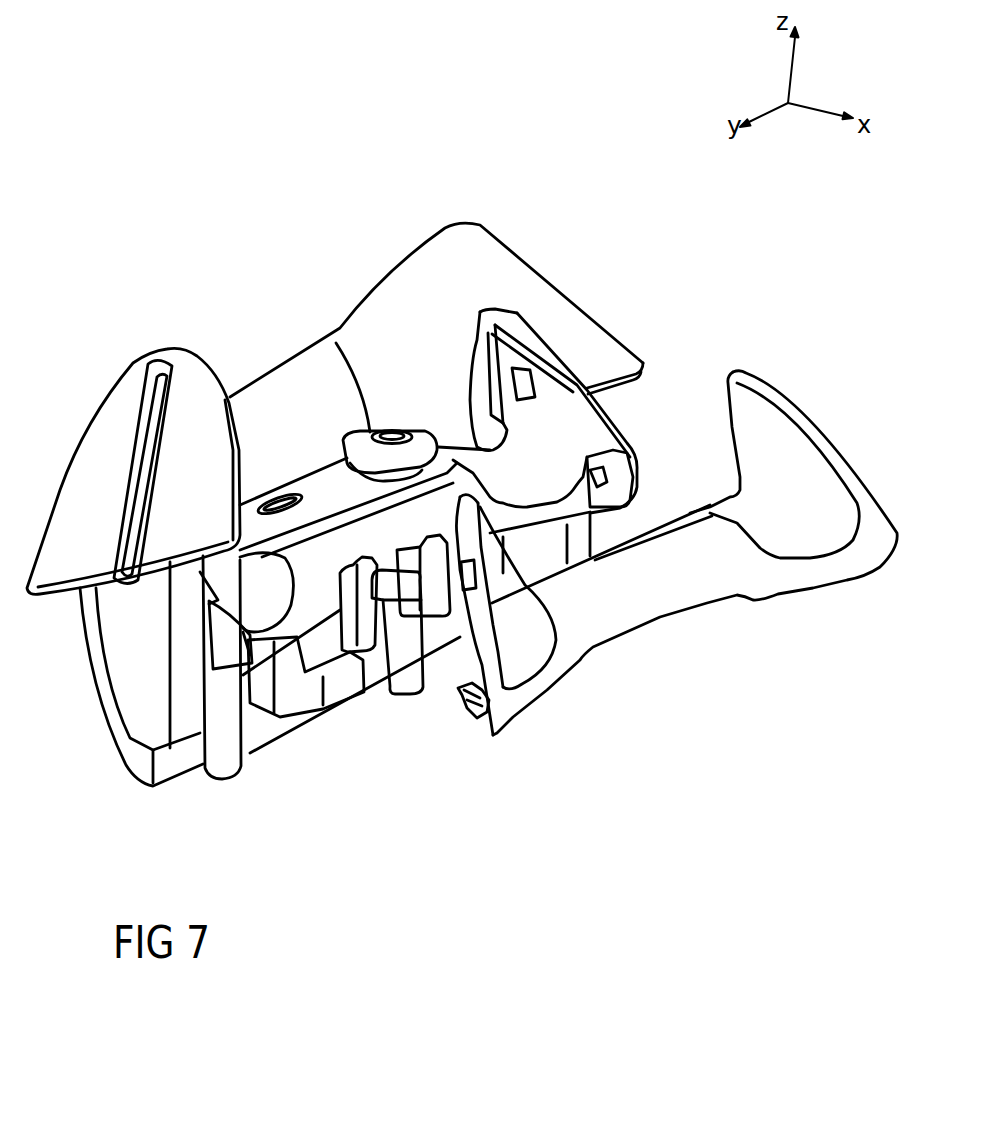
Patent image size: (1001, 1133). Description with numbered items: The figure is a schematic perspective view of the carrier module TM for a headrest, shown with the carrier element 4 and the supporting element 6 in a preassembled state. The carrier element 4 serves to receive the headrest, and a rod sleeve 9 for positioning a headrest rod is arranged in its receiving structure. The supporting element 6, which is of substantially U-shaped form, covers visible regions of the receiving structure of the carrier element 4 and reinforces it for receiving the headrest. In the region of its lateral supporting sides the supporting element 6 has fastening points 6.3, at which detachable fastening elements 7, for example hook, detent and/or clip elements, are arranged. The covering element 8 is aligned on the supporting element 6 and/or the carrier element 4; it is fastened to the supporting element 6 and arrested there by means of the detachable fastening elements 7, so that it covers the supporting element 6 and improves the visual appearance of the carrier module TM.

The carrier module TM is at (230, 281).
The carrier element 4 is at (539, 254).
The supporting element 6 is at (619, 414).
The fastening point 6.3 is at (617, 472).
The detachable fastening element 7 is at (460, 693).
The covering element 8 is at (835, 412).
The rod sleeve 9 is at (365, 418).